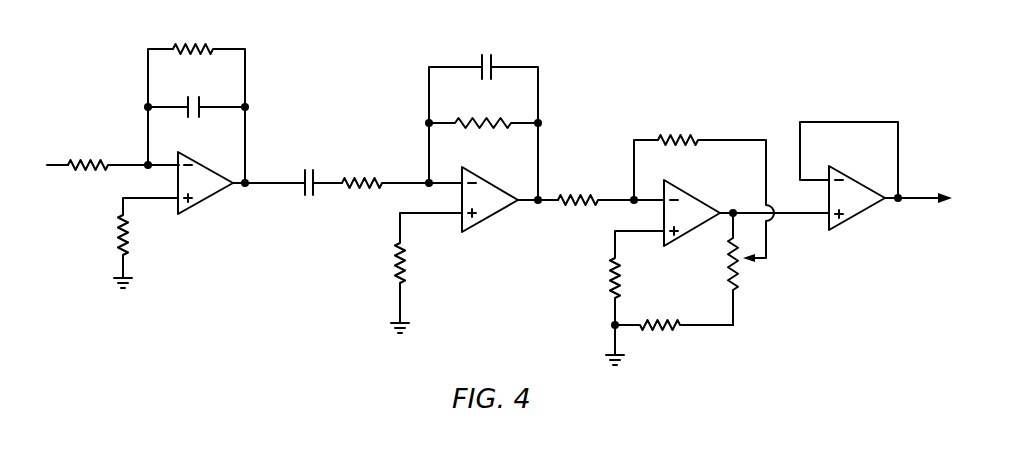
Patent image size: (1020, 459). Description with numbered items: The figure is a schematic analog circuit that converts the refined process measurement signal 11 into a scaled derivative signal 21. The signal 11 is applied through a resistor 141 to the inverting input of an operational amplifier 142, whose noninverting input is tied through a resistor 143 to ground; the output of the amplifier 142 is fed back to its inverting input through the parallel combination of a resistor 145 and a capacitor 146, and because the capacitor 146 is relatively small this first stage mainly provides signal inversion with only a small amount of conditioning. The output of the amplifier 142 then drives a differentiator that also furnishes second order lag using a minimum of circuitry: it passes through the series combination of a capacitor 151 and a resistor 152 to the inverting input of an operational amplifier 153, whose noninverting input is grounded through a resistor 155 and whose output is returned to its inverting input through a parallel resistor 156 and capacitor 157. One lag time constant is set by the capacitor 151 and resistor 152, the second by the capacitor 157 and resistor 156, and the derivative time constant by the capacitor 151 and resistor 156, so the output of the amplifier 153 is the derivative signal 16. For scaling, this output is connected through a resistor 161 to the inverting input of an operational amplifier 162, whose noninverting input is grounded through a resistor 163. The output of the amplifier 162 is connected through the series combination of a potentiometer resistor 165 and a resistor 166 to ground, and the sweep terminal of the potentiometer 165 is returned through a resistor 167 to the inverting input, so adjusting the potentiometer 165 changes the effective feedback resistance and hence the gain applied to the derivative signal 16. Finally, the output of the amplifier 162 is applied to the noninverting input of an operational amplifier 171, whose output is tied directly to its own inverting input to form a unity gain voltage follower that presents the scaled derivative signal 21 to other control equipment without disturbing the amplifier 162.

The refined process measurement signal 11 is at (52, 165).
The resistor 141 is at (79, 165).
The operational amplifier 142 is at (188, 151).
The resistor 143 is at (123, 235).
The resistor 145 is at (193, 47).
The capacitor 146 is at (194, 97).
The capacitor 151 is at (302, 169).
The resistor 152 is at (342, 178).
The operational amplifier 153 is at (464, 176).
The resistor 155 is at (400, 261).
The resistor 156 is at (475, 122).
The capacitor 157 is at (483, 55).
The derivative signal 16 is at (543, 205).
The resistor 161 is at (562, 198).
The operational amplifier 162 is at (687, 195).
The resistor 163 is at (612, 277).
The potentiometer resistor 165 is at (726, 273).
The resistor 166 is at (662, 324).
The resistor 167 is at (670, 136).
The operational amplifier 171 is at (858, 220).
The scaled derivative signal 21 is at (916, 194).